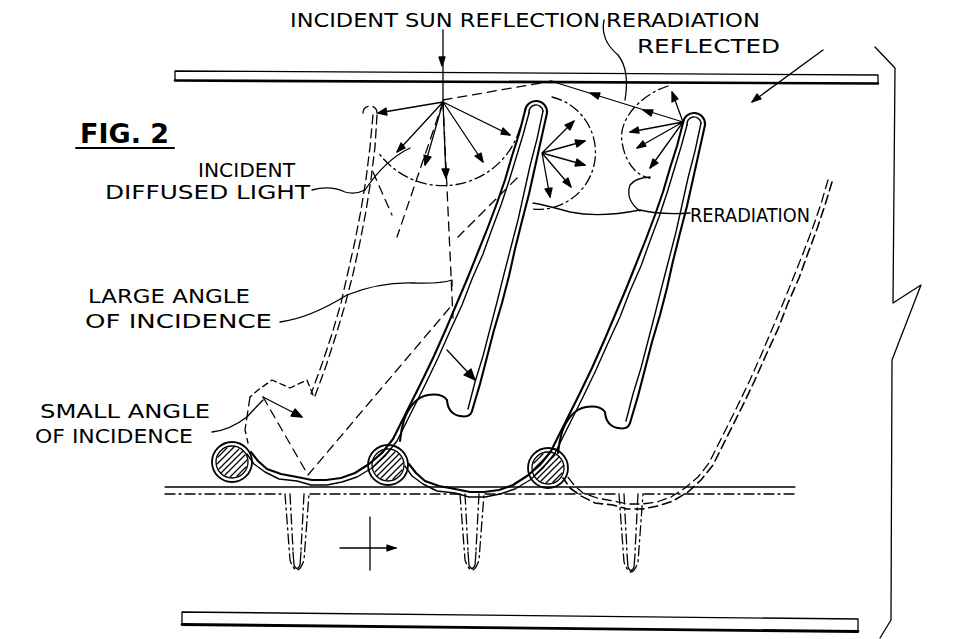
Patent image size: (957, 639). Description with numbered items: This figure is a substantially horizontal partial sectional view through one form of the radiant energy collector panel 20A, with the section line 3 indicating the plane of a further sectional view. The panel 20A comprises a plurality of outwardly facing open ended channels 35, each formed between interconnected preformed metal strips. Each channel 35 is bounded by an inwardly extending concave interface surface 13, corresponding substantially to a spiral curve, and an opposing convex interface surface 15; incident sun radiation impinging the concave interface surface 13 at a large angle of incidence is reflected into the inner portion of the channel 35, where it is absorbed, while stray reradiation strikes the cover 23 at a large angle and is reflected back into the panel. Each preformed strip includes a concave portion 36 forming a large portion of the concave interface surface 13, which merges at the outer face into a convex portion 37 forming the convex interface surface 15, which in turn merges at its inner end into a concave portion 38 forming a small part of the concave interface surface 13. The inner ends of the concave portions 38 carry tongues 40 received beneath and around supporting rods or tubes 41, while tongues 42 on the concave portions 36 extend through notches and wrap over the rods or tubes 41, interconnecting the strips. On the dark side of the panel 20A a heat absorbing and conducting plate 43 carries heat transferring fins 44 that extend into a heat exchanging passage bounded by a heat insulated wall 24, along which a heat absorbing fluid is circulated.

The section line 3— 3 is at (413, 450).
The concave interface surface 13 is at (534, 305).
The convex interface surface 15 is at (521, 263).
The radiant energy collector panel 20A is at (798, 65).
The cover 23 is at (526, 50).
The heat insulated wall 24 is at (262, 590).
The open ended channel 35 is at (405, 324).
The concave portion 36 is at (602, 353).
The convex portion 37 is at (490, 360).
The concave portion 38 is at (310, 381).
The tongue 40 is at (232, 490).
The supporting rod or tube 41 is at (220, 470).
The tongue 42 is at (215, 452).
The heat absorbing and conducting plate 43 is at (718, 499).
The heat transferring fin 44 is at (287, 547).